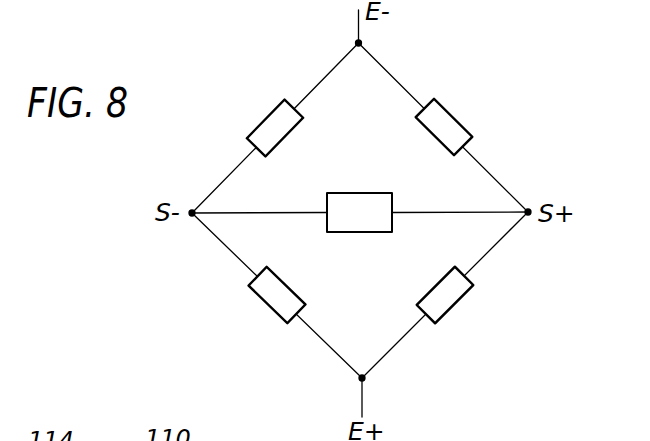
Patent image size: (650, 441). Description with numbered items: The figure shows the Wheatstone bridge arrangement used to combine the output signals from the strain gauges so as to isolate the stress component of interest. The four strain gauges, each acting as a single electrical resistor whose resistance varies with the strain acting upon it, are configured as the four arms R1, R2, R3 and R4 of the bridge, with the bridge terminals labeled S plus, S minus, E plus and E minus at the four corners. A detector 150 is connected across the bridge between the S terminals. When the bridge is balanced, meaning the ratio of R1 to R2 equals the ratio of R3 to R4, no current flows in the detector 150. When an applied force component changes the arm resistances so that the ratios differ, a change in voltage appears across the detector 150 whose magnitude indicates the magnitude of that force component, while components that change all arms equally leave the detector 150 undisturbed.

The first bridge arm resistor R1 is at (453, 300).
The second bridge arm resistor R2 is at (454, 124).
The third bridge arm resistor R3 is at (267, 300).
The fourth bridge arm resistor R4 is at (262, 125).
The detector 150 is at (355, 191).